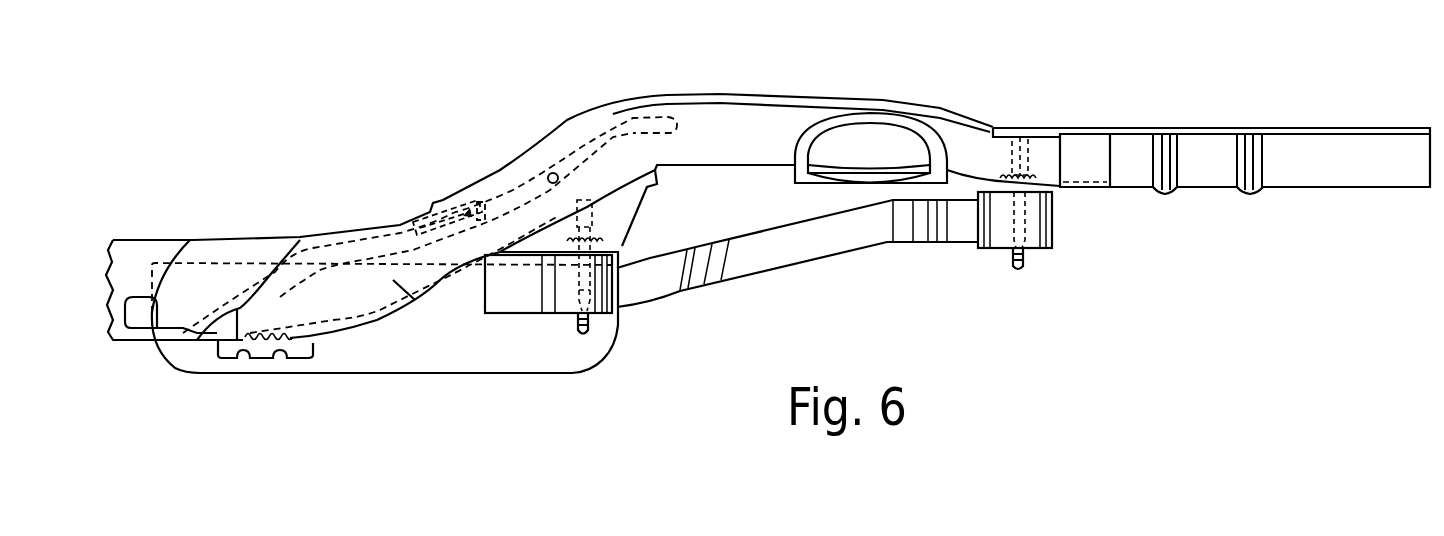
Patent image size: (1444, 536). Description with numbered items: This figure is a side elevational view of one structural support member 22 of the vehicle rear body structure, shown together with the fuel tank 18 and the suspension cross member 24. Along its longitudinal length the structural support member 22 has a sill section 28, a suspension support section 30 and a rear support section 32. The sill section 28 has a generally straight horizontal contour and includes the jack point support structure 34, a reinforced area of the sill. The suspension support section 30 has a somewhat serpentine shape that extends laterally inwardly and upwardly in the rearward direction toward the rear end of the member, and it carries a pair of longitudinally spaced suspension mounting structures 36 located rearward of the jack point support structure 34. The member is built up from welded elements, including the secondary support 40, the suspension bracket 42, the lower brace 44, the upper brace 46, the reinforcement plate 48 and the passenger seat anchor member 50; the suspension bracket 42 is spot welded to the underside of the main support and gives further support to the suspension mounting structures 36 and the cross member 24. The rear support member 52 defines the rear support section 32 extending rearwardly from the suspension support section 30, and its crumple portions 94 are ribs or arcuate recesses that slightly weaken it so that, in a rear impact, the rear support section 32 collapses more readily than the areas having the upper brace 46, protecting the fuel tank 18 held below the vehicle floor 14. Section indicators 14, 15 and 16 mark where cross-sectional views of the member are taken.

The vehicle floor 14 is at (273, 188).
The section line 15- 15 is at (320, 222).
The section line 16- 16 is at (585, 95).
The fuel tank 18 is at (498, 375).
The structural support member 22 is at (688, 96).
The cross member 24 is at (742, 257).
The sill section 28 is at (227, 236).
The suspension support section 30 is at (735, 107).
The rear support section 32 is at (1200, 130).
The jack point support structure 34 is at (268, 340).
The suspension mounting structures 36 is at (590, 228).
The secondary support 40 is at (187, 368).
The suspension bracket 42 is at (627, 200).
The lower brace 44 is at (393, 280).
The upper brace 46 is at (580, 160).
The reinforcement plate 48 is at (478, 220).
The passenger seat anchor member 50 is at (430, 218).
The rear support member 52 is at (1346, 132).
The crumple portions 94 is at (1160, 186).